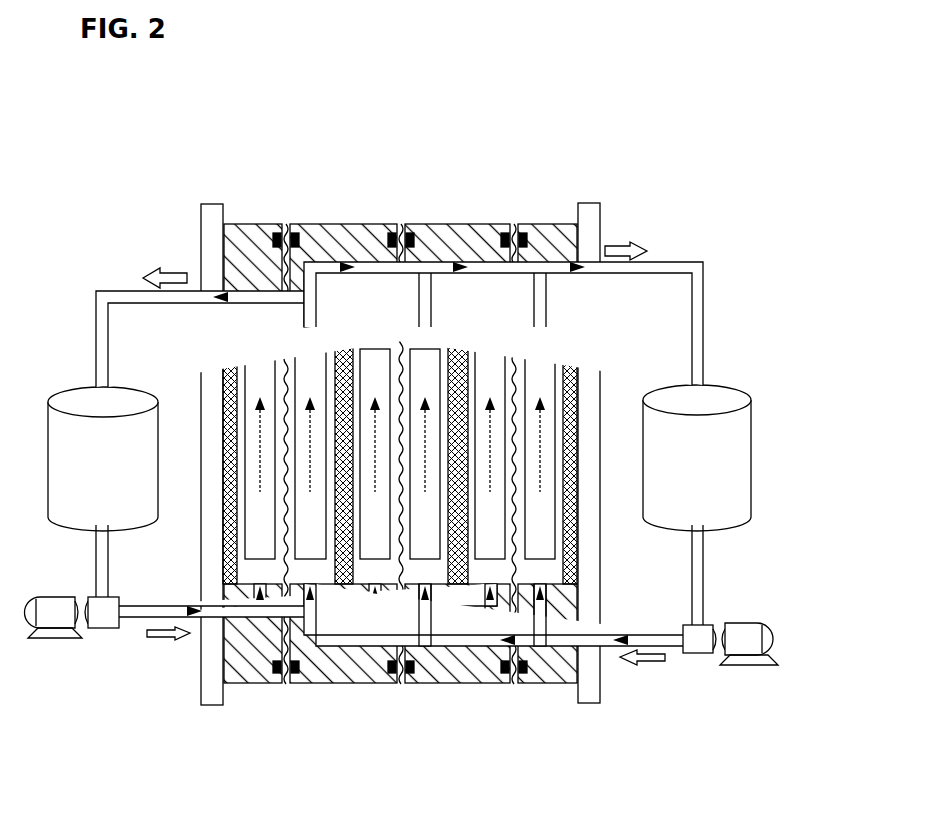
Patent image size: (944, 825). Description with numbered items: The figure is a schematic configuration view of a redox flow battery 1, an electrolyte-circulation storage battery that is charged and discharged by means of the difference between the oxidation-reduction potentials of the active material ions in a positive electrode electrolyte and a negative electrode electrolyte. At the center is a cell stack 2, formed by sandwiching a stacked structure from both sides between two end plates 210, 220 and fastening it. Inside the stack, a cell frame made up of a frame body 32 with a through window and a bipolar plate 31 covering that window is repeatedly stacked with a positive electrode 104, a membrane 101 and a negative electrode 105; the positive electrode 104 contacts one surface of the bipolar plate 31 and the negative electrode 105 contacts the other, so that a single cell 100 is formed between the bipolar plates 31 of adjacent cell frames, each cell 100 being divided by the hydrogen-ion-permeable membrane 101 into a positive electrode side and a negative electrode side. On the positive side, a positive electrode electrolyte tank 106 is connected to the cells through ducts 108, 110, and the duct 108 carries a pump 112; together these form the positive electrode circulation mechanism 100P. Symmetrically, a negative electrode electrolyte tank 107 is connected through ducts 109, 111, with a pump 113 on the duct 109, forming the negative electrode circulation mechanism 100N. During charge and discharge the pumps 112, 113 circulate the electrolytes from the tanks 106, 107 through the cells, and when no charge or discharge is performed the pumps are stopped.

The redox flow battery 1 is at (80, 122).
The cell stack 2 is at (487, 176).
The bipolar plate 31 is at (335, 332).
The frame body 32 is at (247, 226).
The cell 100 is at (402, 553).
The membrane 101 is at (289, 655).
The positive electrode 104 is at (372, 520).
The negative electrode 105 is at (425, 545).
The positive electrode electrolyte tank 106 is at (66, 390).
The negative electrode electrolyte tank 107 is at (735, 388).
The duct 108 is at (137, 622).
The duct 109 is at (667, 650).
The duct 110 is at (110, 290).
The duct 111 is at (690, 262).
The pump 112 is at (45, 600).
The pump 113 is at (748, 625).
The positive electrode circulation mechanism 100P is at (258, 467).
The negative electrode circulation mechanism 100N is at (541, 462).
The end plate 210 is at (595, 690).
The end plate 220 is at (207, 690).